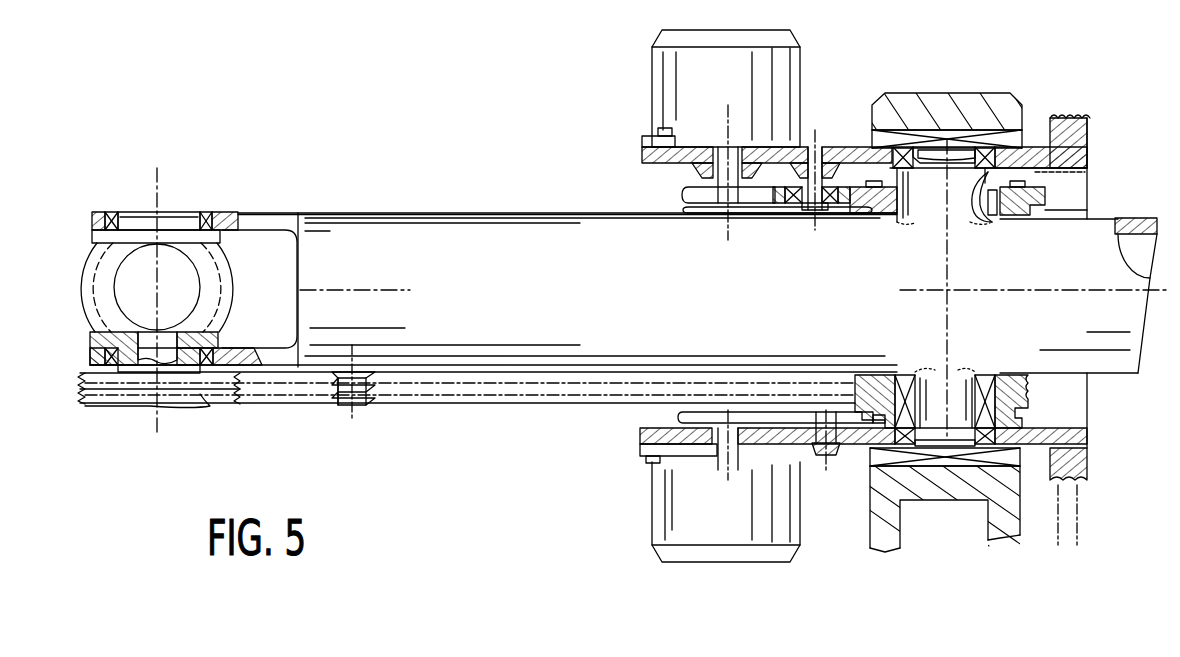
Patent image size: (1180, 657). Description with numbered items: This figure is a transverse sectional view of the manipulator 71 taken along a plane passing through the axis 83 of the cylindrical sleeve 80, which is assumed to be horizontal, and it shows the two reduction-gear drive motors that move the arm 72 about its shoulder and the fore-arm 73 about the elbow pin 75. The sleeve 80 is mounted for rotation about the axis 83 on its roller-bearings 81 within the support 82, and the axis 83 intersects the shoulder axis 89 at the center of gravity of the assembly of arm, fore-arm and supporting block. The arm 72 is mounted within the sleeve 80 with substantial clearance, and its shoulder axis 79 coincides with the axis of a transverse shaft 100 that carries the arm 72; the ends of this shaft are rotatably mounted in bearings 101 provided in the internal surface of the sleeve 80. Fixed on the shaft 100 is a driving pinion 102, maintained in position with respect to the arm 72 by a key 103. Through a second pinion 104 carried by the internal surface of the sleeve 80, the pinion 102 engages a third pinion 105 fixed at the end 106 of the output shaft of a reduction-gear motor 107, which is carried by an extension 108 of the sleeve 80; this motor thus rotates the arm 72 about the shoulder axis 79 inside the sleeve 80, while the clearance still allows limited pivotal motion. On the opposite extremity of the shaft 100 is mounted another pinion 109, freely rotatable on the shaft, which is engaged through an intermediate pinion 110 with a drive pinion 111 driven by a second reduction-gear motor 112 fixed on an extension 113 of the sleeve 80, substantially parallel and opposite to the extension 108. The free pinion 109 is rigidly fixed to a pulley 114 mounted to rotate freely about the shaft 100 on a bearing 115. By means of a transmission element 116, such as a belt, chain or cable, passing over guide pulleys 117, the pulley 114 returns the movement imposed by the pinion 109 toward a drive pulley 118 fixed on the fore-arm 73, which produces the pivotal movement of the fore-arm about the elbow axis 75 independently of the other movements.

The manipulator 71 is at (437, 210).
The arm 72 is at (357, 212).
The fore-arm 73 is at (245, 291).
The elbow pin 75 is at (185, 168).
The shoulder axis 79 is at (946, 284).
The cylindrical sleeve 80 is at (1048, 150).
The roller-bearings 81 is at (935, 135).
The support 82 is at (970, 100).
The axis of the sleeve 83 is at (1116, 290).
The shoulder axis 89 is at (1055, 114).
The transverse shaft 100 is at (912, 210).
The bearings 101 is at (818, 148).
The driving pinion 102 is at (1045, 196).
The key 103 is at (995, 215).
The second pinion 104 is at (785, 203).
The third pinion 105 is at (682, 192).
The end of the output shaft 106 is at (728, 150).
The reduction-gear motor 107 is at (665, 52).
The extension 108 is at (650, 145).
The pinion 109 is at (1022, 419).
The intermediate pinion 110 is at (806, 415).
The drive pinion 111 is at (680, 416).
The second reduction-gear motor 112 is at (665, 508).
The extension 113 is at (642, 434).
The pulley 114 is at (1010, 392).
The bearing 115 is at (898, 385).
The transmission element 116 is at (448, 404).
The guide pulleys 117 is at (352, 410).
The drive pulley 118 is at (212, 400).